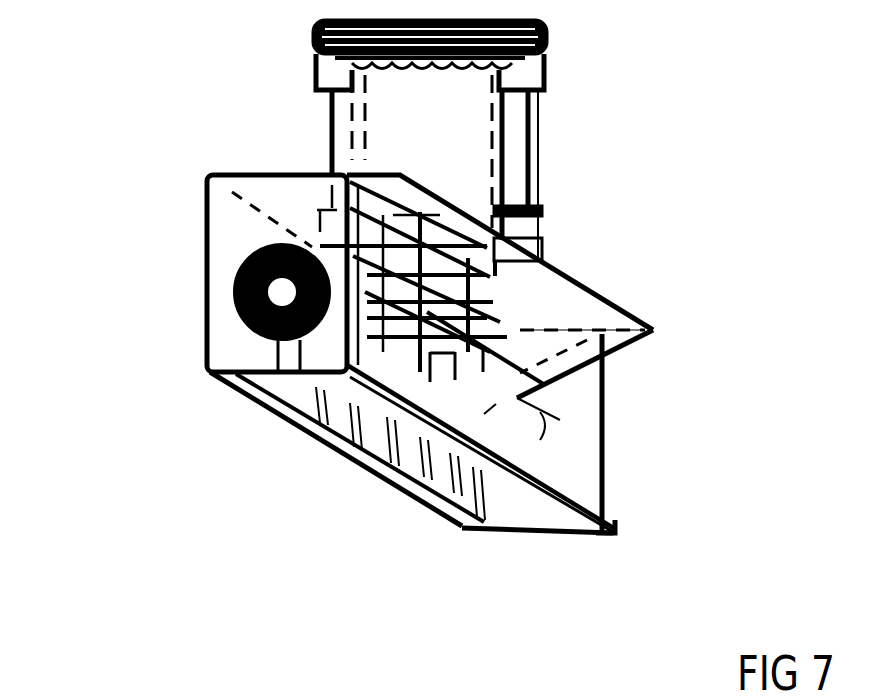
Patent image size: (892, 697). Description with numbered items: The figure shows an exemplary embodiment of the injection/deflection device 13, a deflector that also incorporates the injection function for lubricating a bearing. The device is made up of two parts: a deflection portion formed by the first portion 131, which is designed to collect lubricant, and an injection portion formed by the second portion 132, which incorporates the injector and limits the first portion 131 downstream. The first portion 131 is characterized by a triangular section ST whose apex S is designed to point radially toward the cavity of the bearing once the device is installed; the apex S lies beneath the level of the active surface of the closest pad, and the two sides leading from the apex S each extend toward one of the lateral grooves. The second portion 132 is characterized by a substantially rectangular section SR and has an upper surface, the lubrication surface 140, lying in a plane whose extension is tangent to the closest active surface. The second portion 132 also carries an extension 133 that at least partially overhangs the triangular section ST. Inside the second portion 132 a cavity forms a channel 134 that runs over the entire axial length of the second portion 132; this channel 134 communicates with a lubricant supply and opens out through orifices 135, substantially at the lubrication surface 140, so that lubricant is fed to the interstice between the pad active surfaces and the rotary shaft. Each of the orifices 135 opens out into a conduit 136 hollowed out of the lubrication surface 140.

The injection/deflection device 13 is at (529, 138).
The first portion 131 is at (605, 375).
The second portion 132 is at (343, 465).
The extension 133 is at (617, 535).
The channel 134 is at (242, 302).
The orifices 135 is at (382, 443).
The conduit 136 is at (277, 394).
The lubrication surface 140 is at (490, 522).
The apex S is at (520, 400).
The substantially rectangular section SR is at (577, 428).
The triangular section ST is at (548, 310).